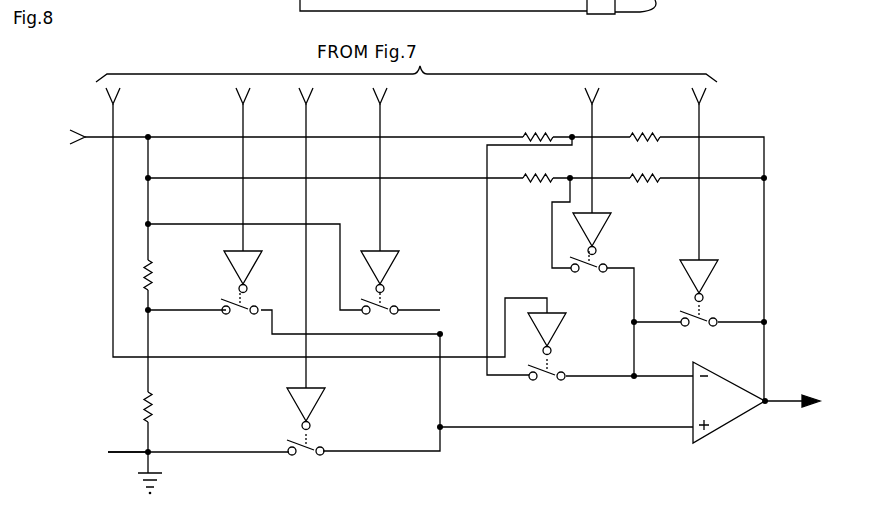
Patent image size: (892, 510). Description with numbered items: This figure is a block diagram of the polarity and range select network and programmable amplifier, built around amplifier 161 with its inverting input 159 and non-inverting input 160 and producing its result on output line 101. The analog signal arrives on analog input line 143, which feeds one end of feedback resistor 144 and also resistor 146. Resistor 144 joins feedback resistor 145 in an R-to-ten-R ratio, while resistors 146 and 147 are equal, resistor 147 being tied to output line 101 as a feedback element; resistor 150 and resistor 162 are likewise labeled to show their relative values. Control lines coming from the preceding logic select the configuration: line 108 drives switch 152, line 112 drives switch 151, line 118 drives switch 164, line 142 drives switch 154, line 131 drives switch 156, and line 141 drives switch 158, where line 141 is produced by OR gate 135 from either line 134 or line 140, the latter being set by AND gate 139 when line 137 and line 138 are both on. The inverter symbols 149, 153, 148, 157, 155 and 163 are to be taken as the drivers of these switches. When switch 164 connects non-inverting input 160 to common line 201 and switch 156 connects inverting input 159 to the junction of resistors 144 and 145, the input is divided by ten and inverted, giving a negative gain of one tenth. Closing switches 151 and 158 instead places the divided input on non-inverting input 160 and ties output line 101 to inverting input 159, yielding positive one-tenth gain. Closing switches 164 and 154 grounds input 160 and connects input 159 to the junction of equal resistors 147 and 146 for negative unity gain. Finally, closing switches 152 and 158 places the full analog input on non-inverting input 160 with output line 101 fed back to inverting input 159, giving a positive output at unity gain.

The output line 101 is at (784, 397).
The line 108 is at (381, 118).
The line 112 is at (244, 118).
The line 118 is at (307, 118).
The line 131 is at (114, 118).
The line 134 is at (648, 0).
The OR gate 135 is at (685, 0).
The line 137 is at (503, 0).
The line 138 is at (472, 9).
The AND gate 139 is at (612, 13).
The line 140 is at (688, 12).
The line 141 is at (700, 118).
The line 142 is at (593, 118).
The analog input line 143 is at (82, 141).
The feedback resistor 144 is at (527, 135).
The feedback resistor 145 is at (651, 134).
The resistor 146 is at (528, 181).
The resistor 147 is at (652, 181).
The inverter symbol 148 is at (597, 214).
The inverter symbol 149 is at (250, 266).
The resistor 150 is at (152, 271).
The switch 151 is at (246, 319).
The switch 152 is at (372, 314).
The inverter symbol 153 is at (388, 262).
The switch 154 is at (588, 272).
The inverter symbol 155 is at (546, 323).
The switch 156 is at (549, 381).
The inverter symbol 157 is at (705, 270).
The switch 158 is at (700, 327).
The inverting input 159 is at (636, 379).
The non-inverting input 160 is at (621, 430).
The amplifier 161 is at (730, 400).
The resistor 162 is at (153, 414).
The inverter symbol 163 is at (313, 398).
The switch 164 is at (300, 456).
The common line 201 is at (210, 453).